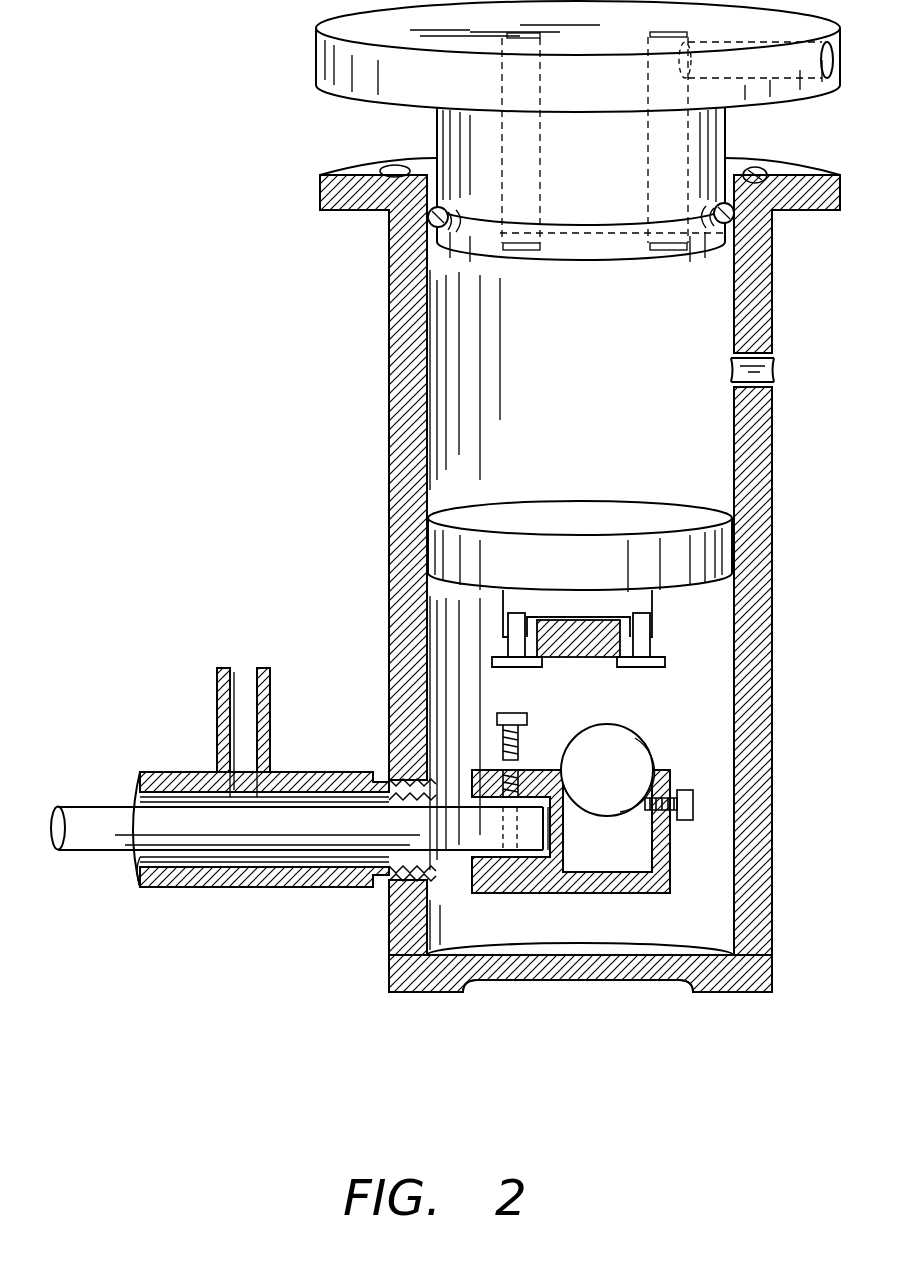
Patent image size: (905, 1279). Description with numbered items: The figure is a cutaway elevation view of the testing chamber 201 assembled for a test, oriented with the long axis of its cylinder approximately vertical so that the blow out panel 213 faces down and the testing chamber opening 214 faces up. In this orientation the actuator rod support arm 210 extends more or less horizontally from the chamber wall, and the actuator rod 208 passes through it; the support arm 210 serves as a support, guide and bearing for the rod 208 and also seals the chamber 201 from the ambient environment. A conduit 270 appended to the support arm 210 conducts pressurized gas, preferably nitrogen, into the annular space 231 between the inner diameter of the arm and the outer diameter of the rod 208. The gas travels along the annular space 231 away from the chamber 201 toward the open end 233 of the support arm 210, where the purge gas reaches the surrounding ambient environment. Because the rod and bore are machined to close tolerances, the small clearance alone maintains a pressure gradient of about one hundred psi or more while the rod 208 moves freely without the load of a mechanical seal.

The testing chamber 201 is at (388, 408).
The testing chamber opening 214 is at (735, 160).
The conduit 270 is at (245, 687).
The actuator rod support arm 210 is at (172, 772).
The annular space 231 is at (302, 800).
The actuator rod 208 is at (87, 835).
The open end 233 is at (148, 855).
The blow out panel 213 is at (715, 1002).